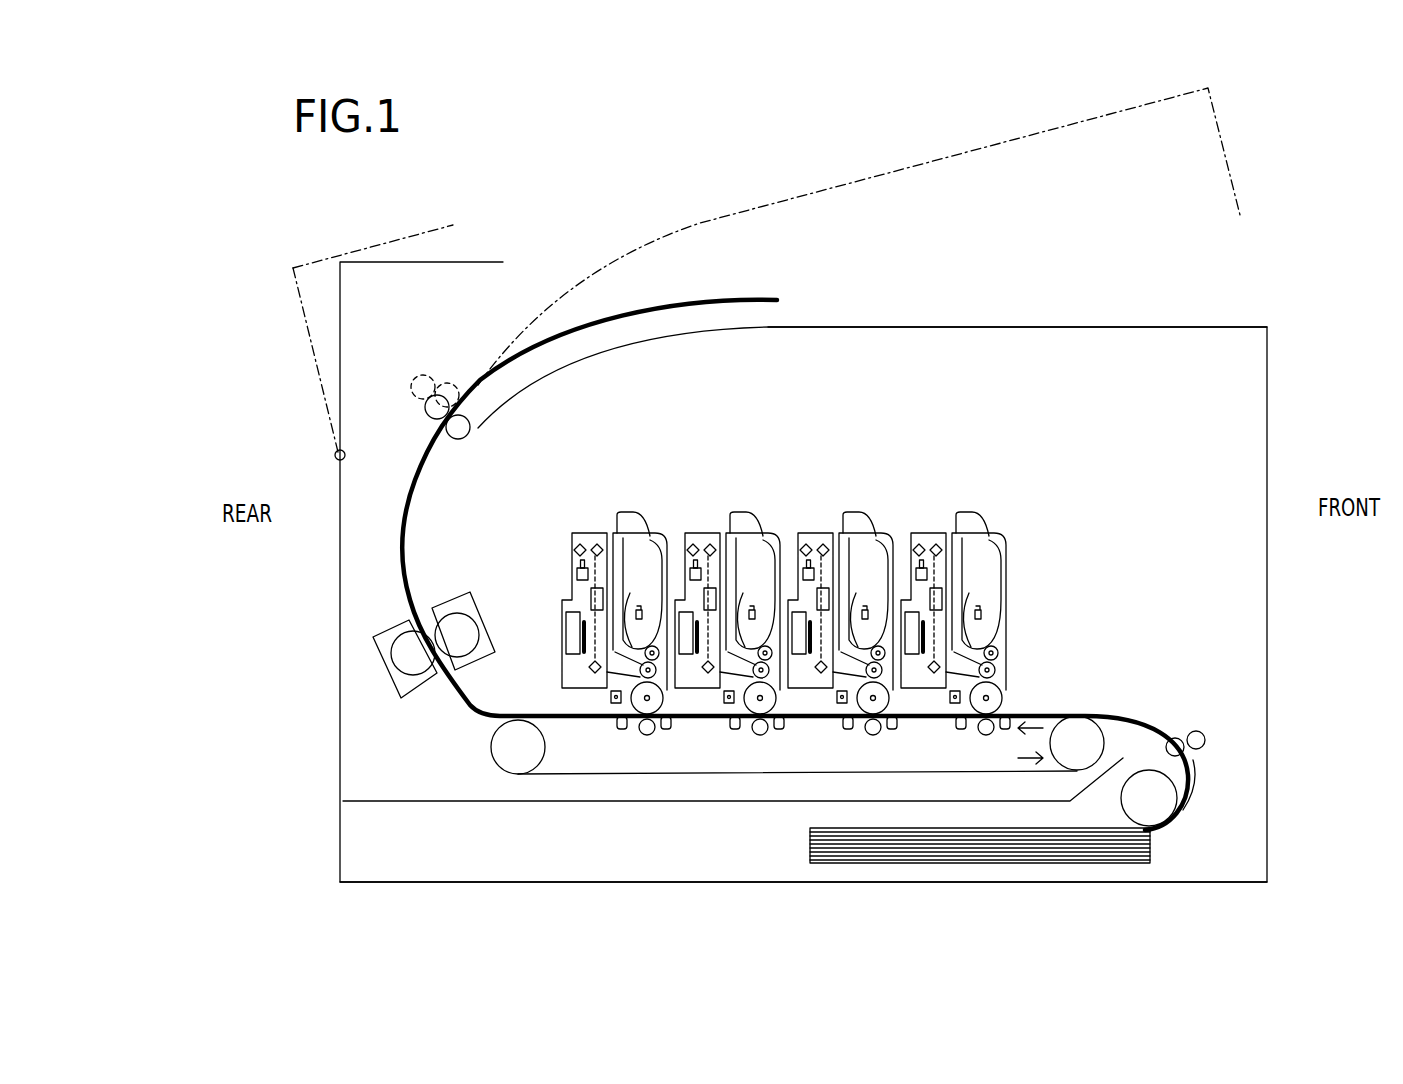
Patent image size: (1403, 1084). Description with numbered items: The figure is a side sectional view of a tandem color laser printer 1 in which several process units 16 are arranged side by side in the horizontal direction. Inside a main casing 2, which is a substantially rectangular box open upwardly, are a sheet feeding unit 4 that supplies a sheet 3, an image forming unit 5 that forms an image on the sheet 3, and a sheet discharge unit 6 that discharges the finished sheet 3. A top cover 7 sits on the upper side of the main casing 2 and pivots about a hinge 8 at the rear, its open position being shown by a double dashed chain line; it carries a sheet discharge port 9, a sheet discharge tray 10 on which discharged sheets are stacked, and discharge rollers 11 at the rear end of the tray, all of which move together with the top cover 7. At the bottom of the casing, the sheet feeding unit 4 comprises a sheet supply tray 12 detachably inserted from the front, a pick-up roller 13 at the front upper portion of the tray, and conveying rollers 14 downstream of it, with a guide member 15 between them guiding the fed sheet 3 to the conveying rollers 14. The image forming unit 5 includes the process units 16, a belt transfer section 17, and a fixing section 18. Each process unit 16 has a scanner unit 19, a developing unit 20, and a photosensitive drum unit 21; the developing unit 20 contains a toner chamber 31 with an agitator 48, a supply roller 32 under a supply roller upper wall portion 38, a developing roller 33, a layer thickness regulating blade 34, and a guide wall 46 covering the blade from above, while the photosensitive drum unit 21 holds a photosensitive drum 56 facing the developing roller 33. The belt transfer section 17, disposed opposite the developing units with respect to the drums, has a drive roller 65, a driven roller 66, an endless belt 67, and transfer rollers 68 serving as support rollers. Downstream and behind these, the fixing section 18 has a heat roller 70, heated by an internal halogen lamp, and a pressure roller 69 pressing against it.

The color laser printer 1 is at (780, 897).
The main casing 2 is at (1268, 582).
The sheet 3 is at (738, 300).
The sheet feeding unit 4 is at (749, 768).
The image forming unit 5 is at (647, 422).
The sheet discharge unit 6 is at (513, 283).
The top cover 7 is at (472, 262).
The hinge 8 is at (336, 454).
The sheet discharge port 9 is at (518, 272).
The sheet discharge tray 10 is at (610, 352).
The discharge rollers 11 is at (442, 424).
The sheet supply tray 12 is at (428, 800).
The pick-up roller 13 is at (1143, 775).
The conveying rollers 14 is at (1196, 730).
The guide member 15 is at (1194, 793).
The process units 16 is at (955, 456).
The belt transfer section 17 is at (780, 759).
The fixing section 18 is at (432, 625).
The scanner unit 19 is at (570, 690).
The developing unit 20 is at (612, 533).
The photosensitive drum unit 21 is at (603, 718).
The toner chamber 31 is at (650, 553).
The supply roller 32 is at (1045, 653).
The developing roller 33 is at (1005, 680).
The layer thickness regulating blade 34 is at (813, 603).
The supply roller upper wall portion 38 is at (1030, 632).
The guide wall 46 is at (798, 607).
The agitator 48 is at (991, 612).
The photosensitive drum 56 is at (648, 735).
The drive roller 65 is at (505, 768).
The driven roller 66 is at (1107, 743).
The endless belt 67 is at (682, 777).
The transfer rollers 68 is at (647, 735).
The pressure roller 69 is at (393, 637).
The heat roller 70 is at (470, 612).